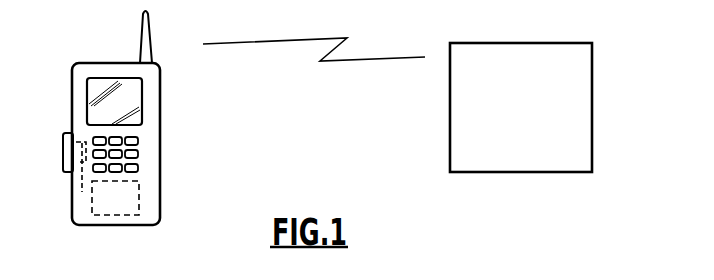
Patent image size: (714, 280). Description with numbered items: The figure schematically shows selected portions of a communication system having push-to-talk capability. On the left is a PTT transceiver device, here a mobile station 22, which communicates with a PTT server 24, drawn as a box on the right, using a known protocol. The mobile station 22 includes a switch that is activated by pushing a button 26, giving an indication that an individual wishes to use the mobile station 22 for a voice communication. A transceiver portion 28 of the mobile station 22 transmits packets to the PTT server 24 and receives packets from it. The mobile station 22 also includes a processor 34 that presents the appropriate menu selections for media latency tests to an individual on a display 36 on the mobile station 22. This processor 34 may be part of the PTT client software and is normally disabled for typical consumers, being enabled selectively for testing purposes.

The mobile station 22 is at (166, 150).
The PTT server 24 is at (575, 86).
The button 26 is at (75, 190).
The transceiver portion 28 is at (66, 150).
The processor 34 is at (121, 203).
The display 36 is at (130, 103).